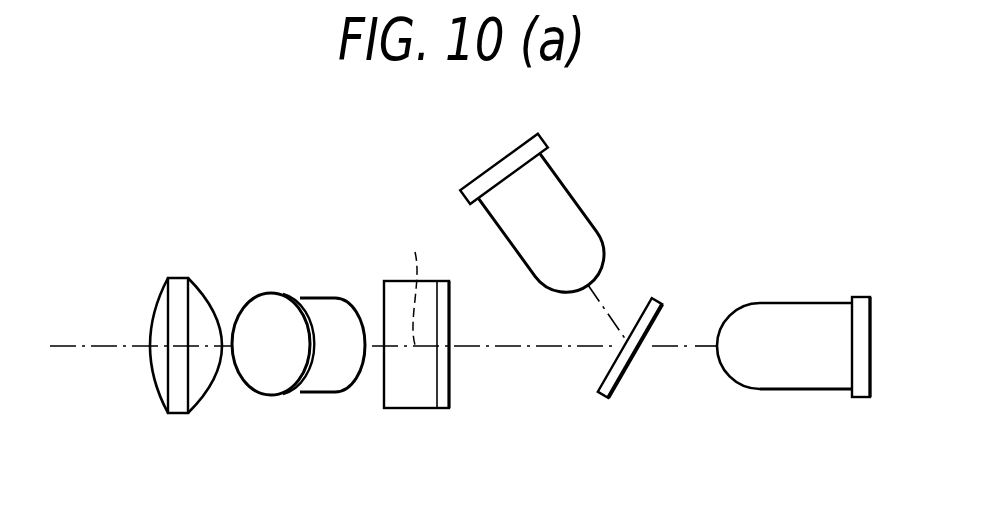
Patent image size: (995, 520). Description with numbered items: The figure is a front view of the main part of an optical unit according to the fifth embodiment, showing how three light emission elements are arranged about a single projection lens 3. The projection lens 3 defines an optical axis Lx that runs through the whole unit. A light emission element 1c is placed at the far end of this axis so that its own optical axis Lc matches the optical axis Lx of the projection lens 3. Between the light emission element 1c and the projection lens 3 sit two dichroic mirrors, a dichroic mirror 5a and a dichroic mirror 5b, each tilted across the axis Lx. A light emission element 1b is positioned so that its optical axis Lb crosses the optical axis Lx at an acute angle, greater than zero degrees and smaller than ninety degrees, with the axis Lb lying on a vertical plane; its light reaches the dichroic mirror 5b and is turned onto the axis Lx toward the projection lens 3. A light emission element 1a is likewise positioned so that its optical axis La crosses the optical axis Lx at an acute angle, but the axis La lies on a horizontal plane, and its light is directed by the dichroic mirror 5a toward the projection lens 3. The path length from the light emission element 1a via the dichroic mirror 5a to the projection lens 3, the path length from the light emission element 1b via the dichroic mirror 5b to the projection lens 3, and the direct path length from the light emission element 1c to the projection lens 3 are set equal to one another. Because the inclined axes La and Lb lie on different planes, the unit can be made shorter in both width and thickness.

The optical axis of the projection lens Lx is at (80, 350).
The projection lens 3 is at (180, 397).
The light emission element 1a is at (268, 303).
The dichroic mirror 5a is at (415, 397).
The optical axis of the light emission element 1a La is at (415, 284).
The light emission element 1b is at (572, 210).
The optical axis of the light emission element 1b Lb is at (603, 291).
The dichroic mirror 5b is at (632, 368).
The optical axis of the light emission element 1c Lc is at (693, 350).
The light emission element 1c is at (796, 313).